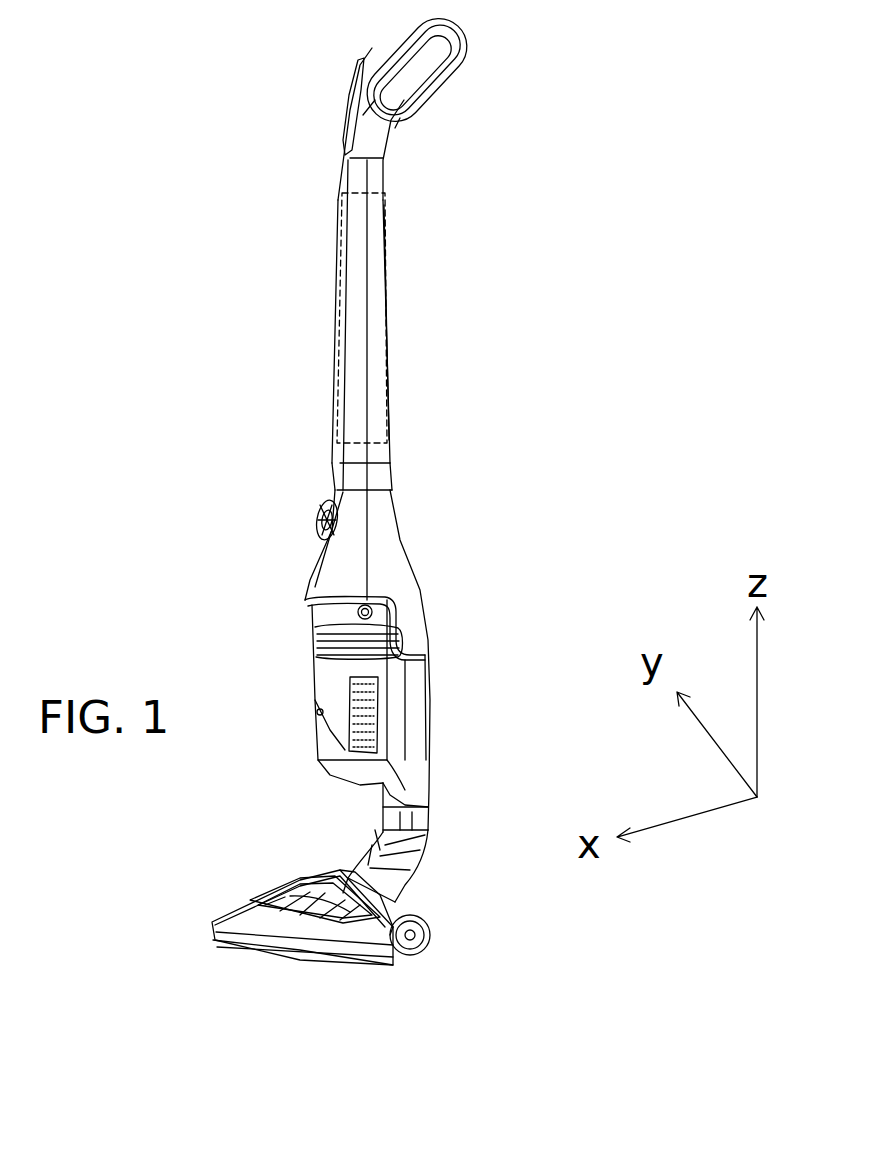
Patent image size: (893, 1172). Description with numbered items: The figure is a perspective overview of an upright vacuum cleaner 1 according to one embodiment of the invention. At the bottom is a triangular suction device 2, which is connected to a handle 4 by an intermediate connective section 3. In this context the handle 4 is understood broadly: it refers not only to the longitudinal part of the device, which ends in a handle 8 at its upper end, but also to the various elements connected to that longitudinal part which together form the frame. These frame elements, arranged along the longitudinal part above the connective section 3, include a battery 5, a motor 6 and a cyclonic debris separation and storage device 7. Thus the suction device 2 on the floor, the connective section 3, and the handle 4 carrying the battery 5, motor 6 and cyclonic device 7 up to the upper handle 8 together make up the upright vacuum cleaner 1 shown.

The upright vacuum cleaner 1 is at (430, 365).
The triangular suction device 2 is at (293, 937).
The intermediate connective section 3 is at (418, 869).
The handle 4 is at (390, 413).
The battery 5 is at (355, 377).
The motor 6 is at (385, 563).
The cyclonic debris separation and storage device 7 is at (333, 673).
The handle 8 is at (430, 83).